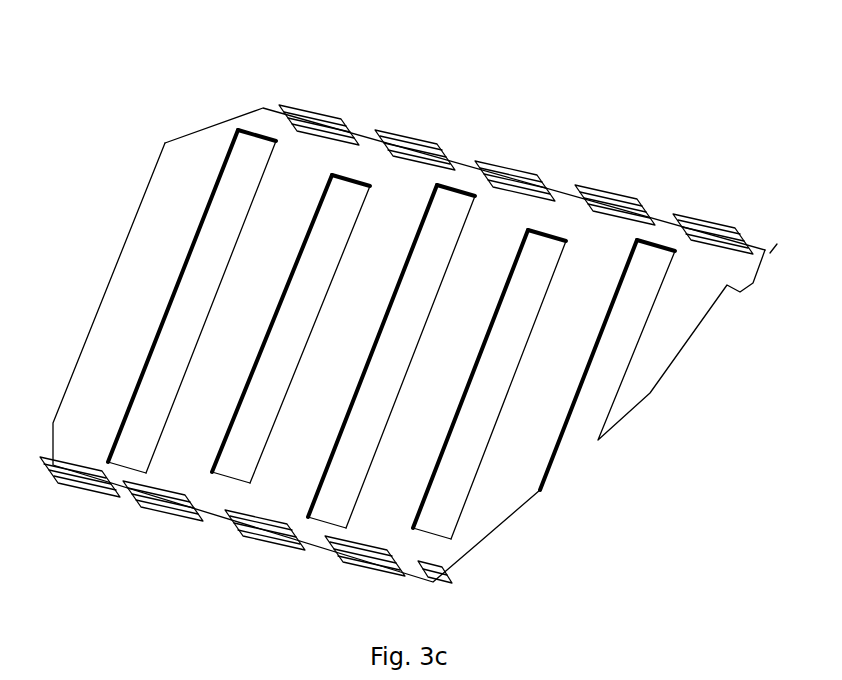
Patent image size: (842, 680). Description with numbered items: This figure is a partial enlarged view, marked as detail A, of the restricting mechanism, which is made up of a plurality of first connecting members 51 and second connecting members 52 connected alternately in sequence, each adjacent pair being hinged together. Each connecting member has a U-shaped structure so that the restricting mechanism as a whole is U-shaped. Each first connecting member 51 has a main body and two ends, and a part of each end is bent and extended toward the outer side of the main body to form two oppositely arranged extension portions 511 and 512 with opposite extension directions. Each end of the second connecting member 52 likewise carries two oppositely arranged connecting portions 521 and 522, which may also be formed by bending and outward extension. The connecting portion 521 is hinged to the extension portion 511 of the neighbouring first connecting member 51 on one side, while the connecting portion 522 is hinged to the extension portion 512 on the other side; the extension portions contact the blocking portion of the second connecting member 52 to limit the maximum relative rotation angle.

The first connecting member 51 is at (363, 160).
The second connecting member 52 is at (443, 173).
The extension portion 511 is at (177, 490).
The extension portion 512 is at (230, 507).
The connecting portion 521 is at (137, 507).
The connecting portion 522 is at (283, 547).
The detail region A is at (148, 112).